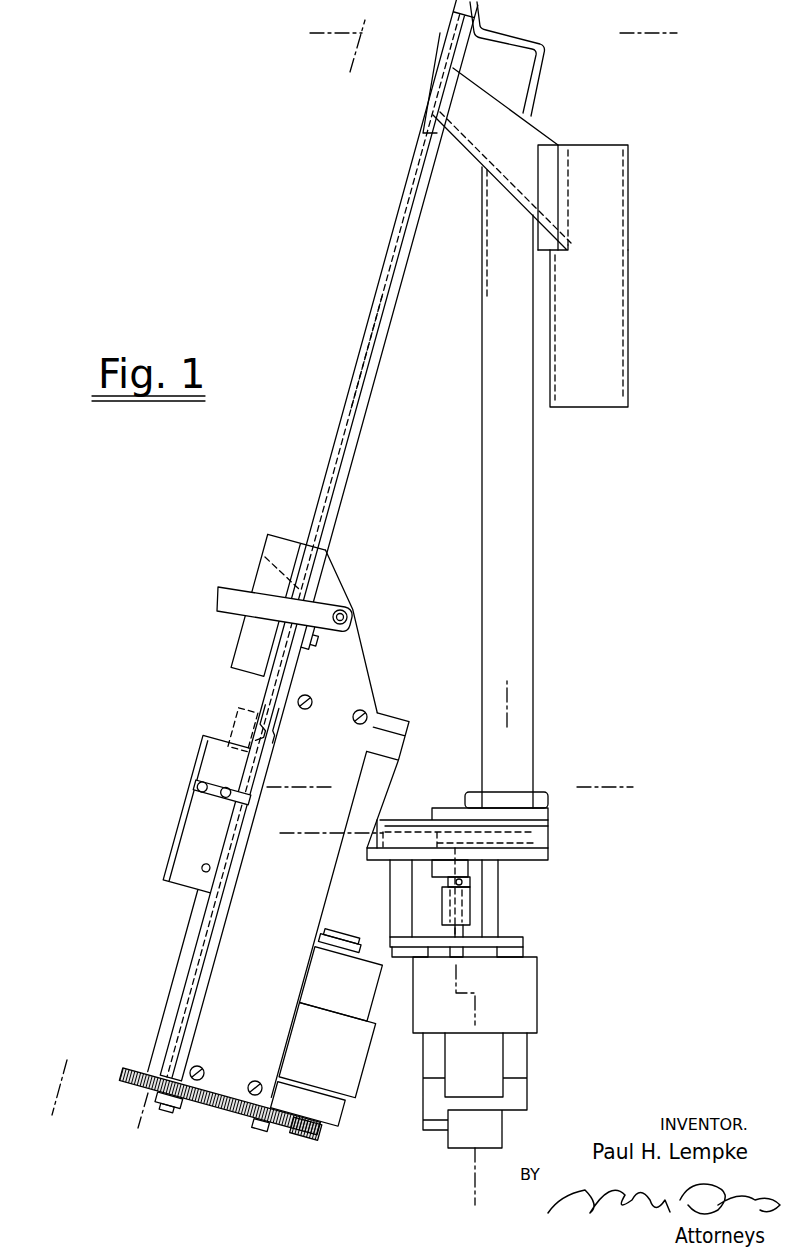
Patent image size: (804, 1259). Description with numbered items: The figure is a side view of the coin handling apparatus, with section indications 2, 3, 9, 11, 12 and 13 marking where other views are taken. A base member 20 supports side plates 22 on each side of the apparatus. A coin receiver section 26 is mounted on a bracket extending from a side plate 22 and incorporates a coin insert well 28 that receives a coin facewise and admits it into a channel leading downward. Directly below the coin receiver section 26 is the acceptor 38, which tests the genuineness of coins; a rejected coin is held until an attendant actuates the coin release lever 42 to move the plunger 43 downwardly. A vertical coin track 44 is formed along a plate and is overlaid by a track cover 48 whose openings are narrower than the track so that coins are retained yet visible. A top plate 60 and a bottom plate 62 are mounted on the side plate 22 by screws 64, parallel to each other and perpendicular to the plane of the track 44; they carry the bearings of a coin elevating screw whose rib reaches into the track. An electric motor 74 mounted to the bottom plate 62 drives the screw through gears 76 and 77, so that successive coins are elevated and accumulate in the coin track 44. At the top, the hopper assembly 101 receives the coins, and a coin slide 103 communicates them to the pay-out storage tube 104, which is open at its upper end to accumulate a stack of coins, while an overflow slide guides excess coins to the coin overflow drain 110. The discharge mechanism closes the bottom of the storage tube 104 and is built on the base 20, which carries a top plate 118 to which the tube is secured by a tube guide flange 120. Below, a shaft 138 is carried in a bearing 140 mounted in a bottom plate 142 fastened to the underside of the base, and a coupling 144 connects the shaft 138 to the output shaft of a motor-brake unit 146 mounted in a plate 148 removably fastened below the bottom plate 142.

The section line 2- 2 is at (365, 20).
The section line 3- 3 is at (347, 405).
The section line 9- 9 is at (310, 33).
The section line 11- 11 is at (478, 13).
The section line 12- 12 is at (267, 787).
The section line 13- 13 is at (507, 680).
The base member 20 is at (551, 840).
The side plate 22 is at (260, 982).
The coin receiver section 26 is at (215, 649).
The coin insert well 28 is at (300, 620).
The acceptor 38 is at (150, 845).
The coin release lever 42 is at (232, 598).
The plunger 43 is at (262, 727).
The coin track 44 is at (368, 337).
The track cover 48 is at (328, 458).
The top plate 60 is at (411, 736).
The bottom plate 62 is at (344, 1114).
The screws 64 is at (355, 722).
The electric motor 74 is at (334, 1052).
The gear 76 is at (320, 1136).
The gear 77 is at (122, 1074).
The hopper assembly 101 is at (566, 131).
The coin slide 103 is at (478, 156).
The pay-out storage tube 104 is at (534, 515).
The coin overflow drain 110 is at (618, 320).
The top plate 118 is at (549, 813).
The tube guide flange 120 is at (540, 798).
The shaft 138 is at (470, 884).
The bearing 140 is at (438, 873).
The bottom plate 142 is at (545, 853).
The coupling 144 is at (445, 907).
The motor-brake unit 146 is at (540, 986).
The plate 148 is at (525, 943).